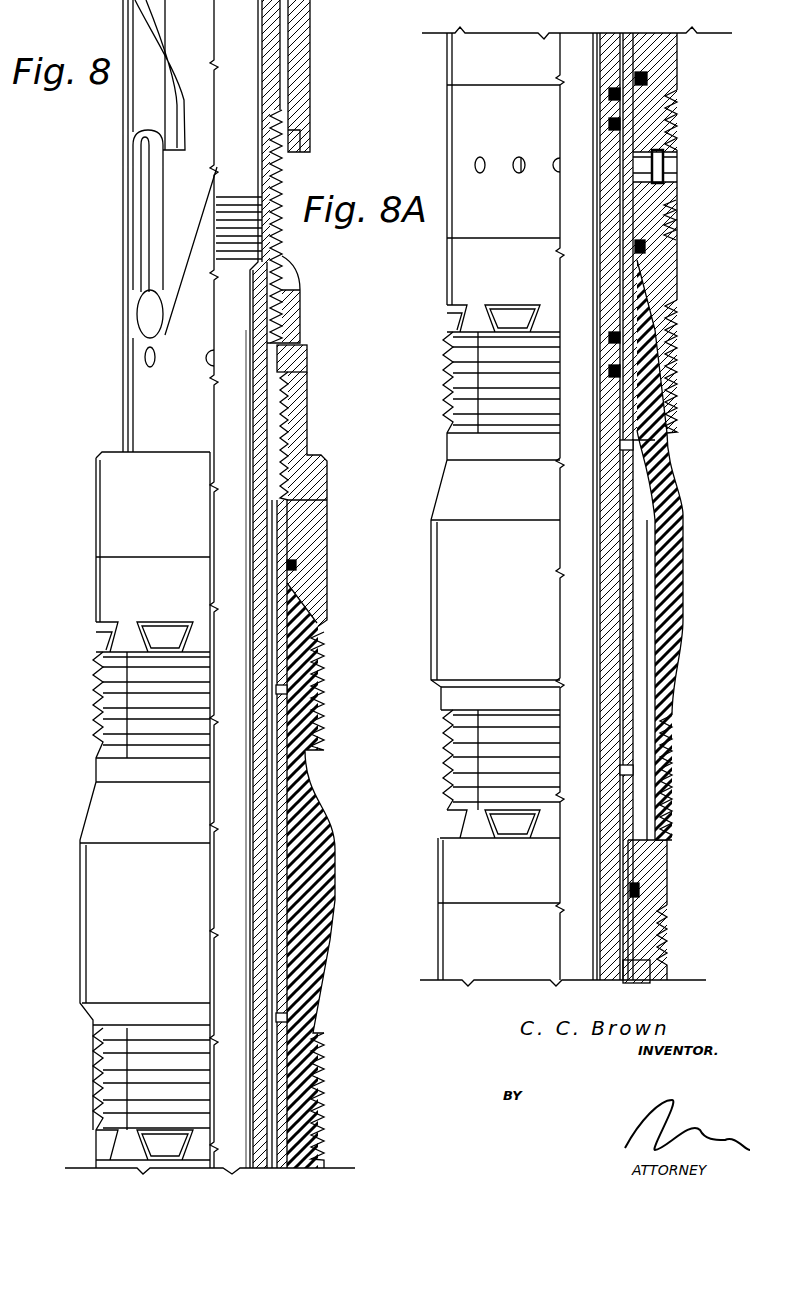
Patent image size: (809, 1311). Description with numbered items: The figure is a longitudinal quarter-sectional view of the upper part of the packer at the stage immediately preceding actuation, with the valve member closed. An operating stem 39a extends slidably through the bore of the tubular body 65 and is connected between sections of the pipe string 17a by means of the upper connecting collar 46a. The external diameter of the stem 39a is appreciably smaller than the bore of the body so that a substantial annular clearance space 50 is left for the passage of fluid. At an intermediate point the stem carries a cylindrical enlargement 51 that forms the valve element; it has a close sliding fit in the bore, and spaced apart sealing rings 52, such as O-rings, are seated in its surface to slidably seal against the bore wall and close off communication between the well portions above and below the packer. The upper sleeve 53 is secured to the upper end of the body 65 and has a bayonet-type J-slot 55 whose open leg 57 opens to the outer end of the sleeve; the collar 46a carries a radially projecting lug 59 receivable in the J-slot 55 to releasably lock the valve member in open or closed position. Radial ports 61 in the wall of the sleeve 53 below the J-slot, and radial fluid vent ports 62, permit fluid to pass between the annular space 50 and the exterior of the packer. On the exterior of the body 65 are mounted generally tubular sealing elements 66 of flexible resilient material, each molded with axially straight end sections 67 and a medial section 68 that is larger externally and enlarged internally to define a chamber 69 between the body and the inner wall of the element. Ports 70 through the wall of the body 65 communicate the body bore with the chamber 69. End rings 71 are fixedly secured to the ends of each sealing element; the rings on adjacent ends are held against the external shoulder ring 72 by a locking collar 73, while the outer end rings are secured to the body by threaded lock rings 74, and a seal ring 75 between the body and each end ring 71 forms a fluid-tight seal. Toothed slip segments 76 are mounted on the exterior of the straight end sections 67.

In FIG. 8, the pipe string 17a is at (272, 44).
In FIG. 8, the upper collar 46a is at (283, 173).
In FIG. 8, the upper sleeve 53 is at (122, 106).
In FIG. 8, the open leg 57 is at (172, 80).
In FIG. 8, the J-slot 55 is at (136, 208).
In FIG. 8, the lug 59 is at (145, 313).
In FIG. 8, the operating stem 39a is at (262, 438).
In FIG. 8A, the operating stem 39a is at (603, 45).
In FIG. 8, the radial ports 61 is at (301, 368).
In FIG. 8, the threaded lock ring 74 is at (328, 490).
In FIG. 8, the annular clearance space 50 is at (272, 613).
In FIG. 8, the seal ring 75 is at (297, 567).
In FIG. 8A, the seal ring 75 is at (649, 78).
In FIG. 8, the end ring 71 is at (316, 596).
In FIG. 8A, the end ring 71 is at (676, 50).
In FIG. 8, the toothed slip segment 76 is at (321, 656).
In FIG. 8A, the toothed slip segment 76 is at (675, 330).
In FIG. 8, the port 70 is at (276, 690).
In FIG. 8A, the port 70 is at (623, 447).
In FIG. 8, the end section 67 is at (300, 690).
In FIG. 8A, the end section 67 is at (646, 370).
In FIG. 8, the medial section 68 is at (333, 863).
In FIG. 8A, the medial section 68 is at (675, 572).
In FIG. 8, the chamber 69 is at (290, 893).
In FIG. 8A, the chamber 69 is at (638, 543).
In FIG. 8, the sealing element 66 is at (76, 890).
In FIG. 8A, the sealing element 66 is at (699, 610).
In FIG. 8A, the sealing rings 52 is at (608, 124).
In FIG. 8A, the radial fluid vent ports 62 is at (517, 174).
In FIG. 8A, the external shoulder ring 72 is at (652, 183).
In FIG. 8A, the locking collar 73 is at (679, 118).
In FIG. 8A, the cylindrical enlargement 51 is at (621, 272).
In FIG. 8A, the tubular body 65 is at (628, 492).